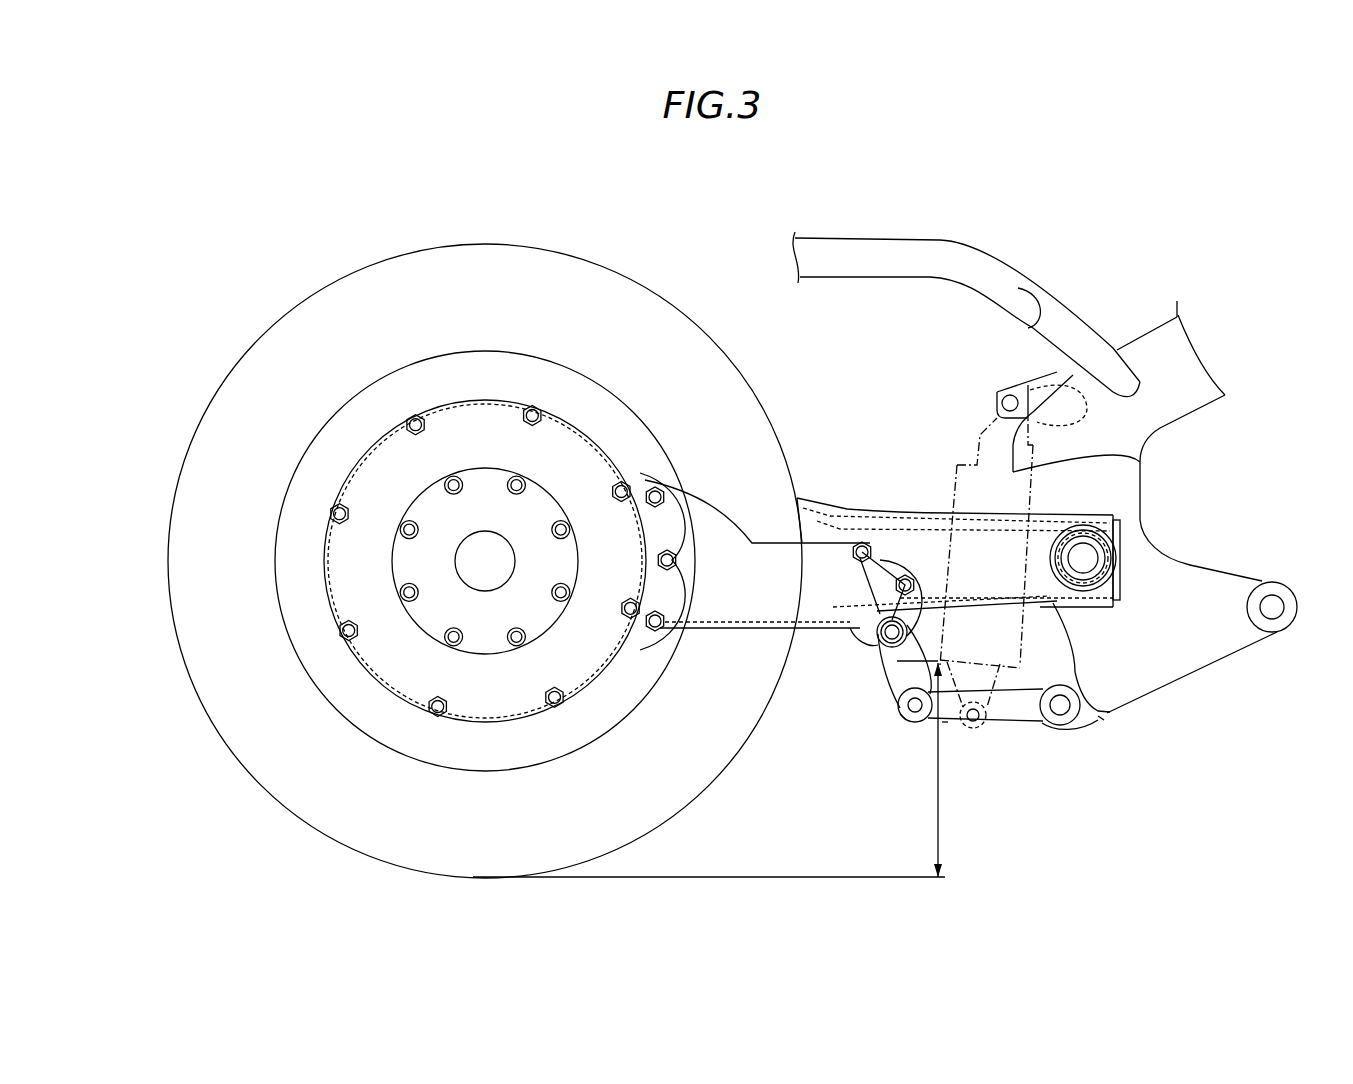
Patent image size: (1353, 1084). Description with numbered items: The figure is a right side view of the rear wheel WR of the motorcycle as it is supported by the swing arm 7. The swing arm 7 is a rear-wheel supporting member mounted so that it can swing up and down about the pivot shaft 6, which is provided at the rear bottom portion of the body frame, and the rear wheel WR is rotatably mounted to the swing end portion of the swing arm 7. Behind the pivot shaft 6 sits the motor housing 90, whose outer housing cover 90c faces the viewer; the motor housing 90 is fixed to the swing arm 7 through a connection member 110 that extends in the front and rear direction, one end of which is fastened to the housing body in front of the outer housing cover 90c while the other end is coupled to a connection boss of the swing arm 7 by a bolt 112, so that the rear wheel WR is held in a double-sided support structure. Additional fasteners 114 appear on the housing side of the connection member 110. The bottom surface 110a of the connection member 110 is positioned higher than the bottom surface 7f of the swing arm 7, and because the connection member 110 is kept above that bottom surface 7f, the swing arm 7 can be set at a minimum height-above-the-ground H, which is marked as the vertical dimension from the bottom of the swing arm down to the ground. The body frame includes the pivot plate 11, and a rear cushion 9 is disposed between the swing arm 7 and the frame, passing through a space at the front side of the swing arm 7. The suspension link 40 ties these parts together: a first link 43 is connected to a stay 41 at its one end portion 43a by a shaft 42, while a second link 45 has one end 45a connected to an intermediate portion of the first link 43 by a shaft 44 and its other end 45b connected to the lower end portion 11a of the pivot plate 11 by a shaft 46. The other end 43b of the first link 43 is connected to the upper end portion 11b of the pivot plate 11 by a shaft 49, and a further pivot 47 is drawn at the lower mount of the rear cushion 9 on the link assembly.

The rear wheel WR is at (232, 756).
The motor housing 90 is at (488, 642).
The outer housing cover 90c is at (583, 657).
The fastening nuts 114 is at (663, 616).
The connection member 110 is at (820, 598).
The bottom surface of the connection member 110a is at (722, 628).
The bolt 112 is at (860, 543).
The swing arm 7 is at (803, 505).
The pivot shaft 6 is at (1086, 565).
The bottom surface of the swing arm 7f is at (884, 650).
The shaft 42 is at (880, 613).
The one end portion of the first link 43a is at (908, 612).
The first link 43 is at (903, 678).
The other end of the first link 43b is at (945, 722).
The shaft 44 is at (910, 718).
The second link 45 is at (1016, 708).
The one end of the second link 45a is at (900, 714).
The other end of the second link 45b is at (1100, 718).
The shaft 46 is at (1058, 710).
The shock absorber lower mount 47 is at (975, 720).
The lower end portion of the pivot plate 11a is at (1082, 718).
The pivot plate 11 is at (1150, 430).
The upper end portion of the pivot plate 11b is at (1017, 378).
The shaft 49 is at (1003, 400).
The rear cushion 9 is at (962, 456).
The stay 41 is at (863, 643).
The suspension link 40 is at (1016, 811).
The minimum height-above-the-ground H is at (716, 769).